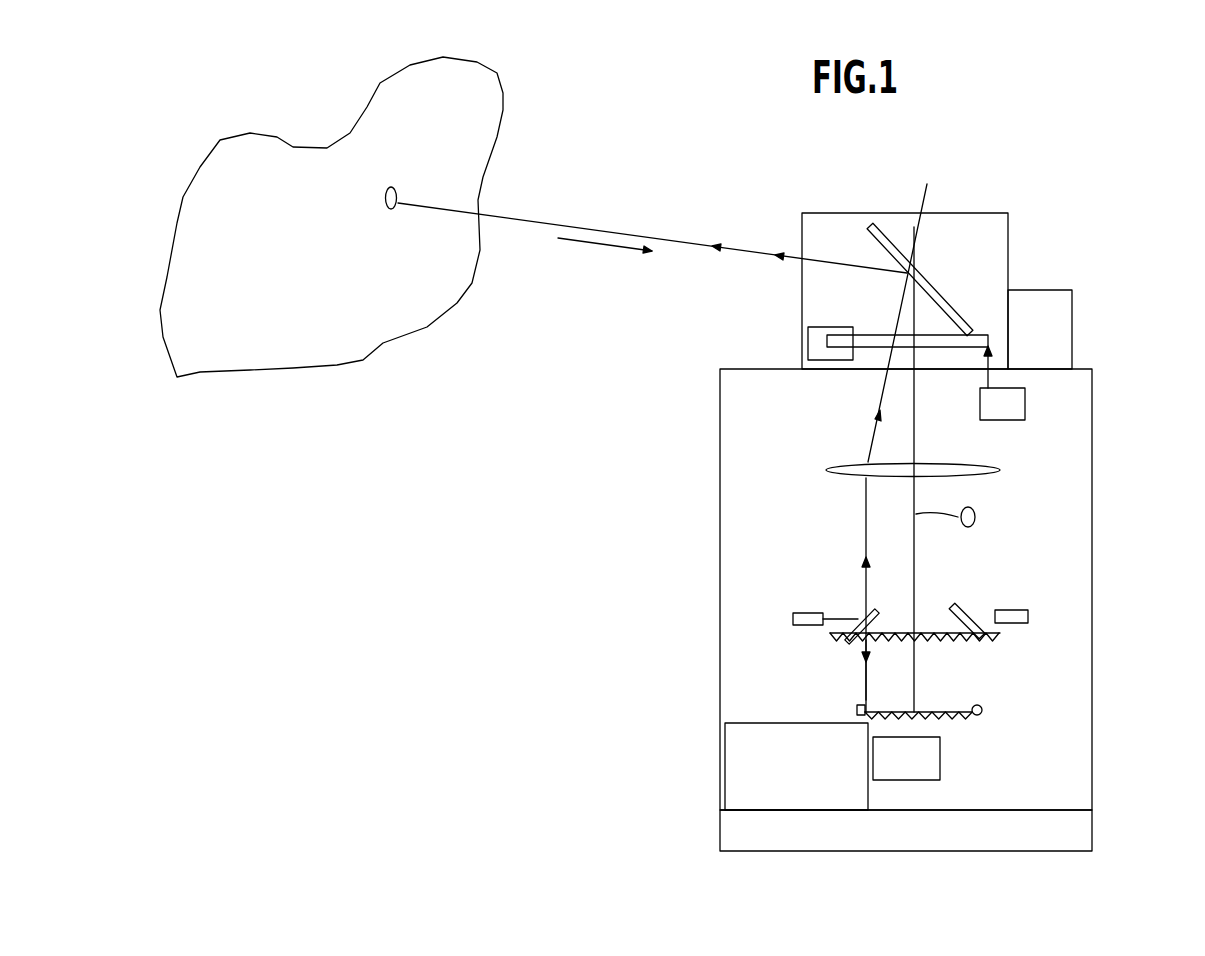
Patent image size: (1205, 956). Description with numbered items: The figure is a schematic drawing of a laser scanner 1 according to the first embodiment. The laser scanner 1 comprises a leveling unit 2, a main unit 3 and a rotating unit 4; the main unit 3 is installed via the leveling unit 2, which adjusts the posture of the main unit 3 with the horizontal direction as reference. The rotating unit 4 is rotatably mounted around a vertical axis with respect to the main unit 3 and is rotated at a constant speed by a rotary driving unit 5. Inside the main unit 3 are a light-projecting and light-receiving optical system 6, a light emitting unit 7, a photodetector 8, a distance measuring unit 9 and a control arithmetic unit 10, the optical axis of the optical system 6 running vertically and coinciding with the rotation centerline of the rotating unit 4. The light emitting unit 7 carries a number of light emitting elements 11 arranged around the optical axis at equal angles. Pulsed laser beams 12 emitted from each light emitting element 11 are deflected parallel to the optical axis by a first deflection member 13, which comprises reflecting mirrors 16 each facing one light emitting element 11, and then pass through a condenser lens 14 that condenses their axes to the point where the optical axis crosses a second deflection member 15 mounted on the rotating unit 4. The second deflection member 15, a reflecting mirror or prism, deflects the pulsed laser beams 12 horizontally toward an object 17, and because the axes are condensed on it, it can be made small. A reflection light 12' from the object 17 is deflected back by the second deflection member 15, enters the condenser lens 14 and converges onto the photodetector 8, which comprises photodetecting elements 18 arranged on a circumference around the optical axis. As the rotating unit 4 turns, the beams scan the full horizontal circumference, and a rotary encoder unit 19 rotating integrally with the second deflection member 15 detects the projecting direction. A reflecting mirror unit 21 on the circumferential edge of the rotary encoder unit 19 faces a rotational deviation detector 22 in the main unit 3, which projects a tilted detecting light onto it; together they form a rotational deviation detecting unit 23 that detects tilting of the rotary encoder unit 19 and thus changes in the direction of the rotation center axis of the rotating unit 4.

The laser scanner 1 is at (763, 196).
The leveling unit 2 is at (1093, 833).
The main unit 3 is at (1092, 558).
The rotating unit 4 is at (1008, 241).
The rotary driving unit 5 is at (1072, 322).
The light-projecting and light-receiving optical system 6 is at (832, 447).
The light emitting unit 7 is at (1025, 600).
The photodetector 8 is at (988, 718).
The distance measuring unit 9 is at (940, 760).
The control arithmetic unit 10 is at (723, 760).
The light emitting element 11 is at (1023, 623).
The pulsed laser beam 12 is at (662, 436).
The reflection light 12' is at (708, 469).
The first deflection member 13 is at (977, 606).
The condenser lens 14 is at (836, 478).
The second deflection member 15 is at (927, 184).
The reflecting mirror 16 is at (951, 608).
The object 17 is at (503, 110).
The photodetecting element 18 is at (980, 702).
The rotary encoder unit 19 is at (873, 335).
The reflecting mirror unit 21 is at (983, 331).
The rotational deviation detector 22 is at (1025, 405).
The rotational deviation detecting unit 23 is at (969, 384).